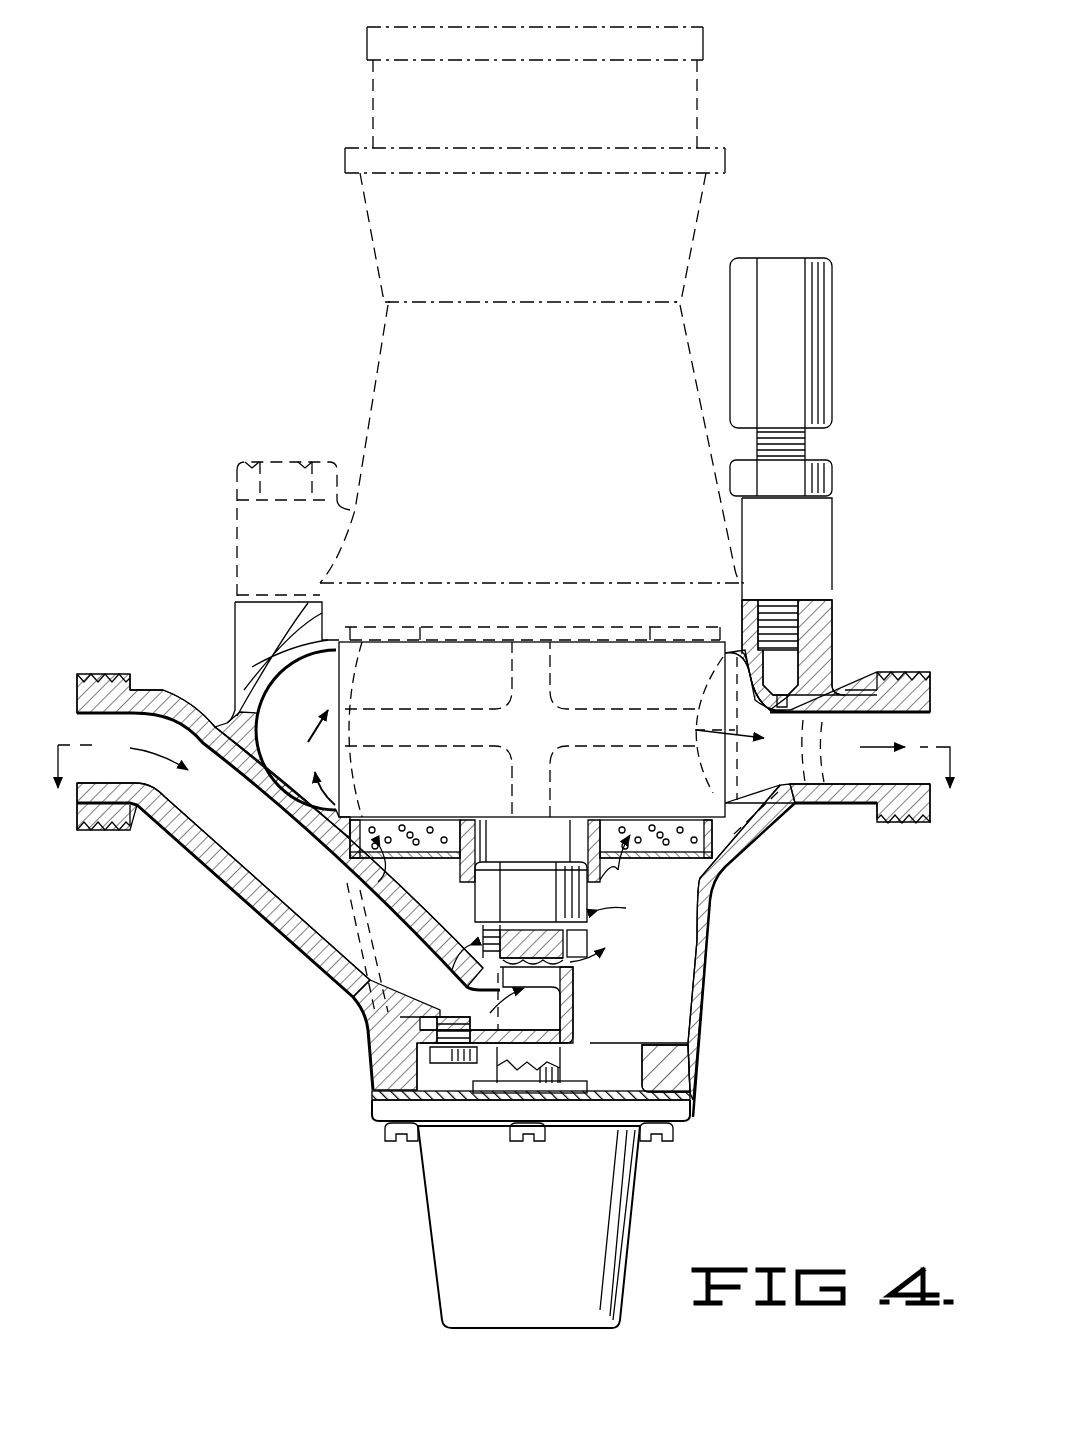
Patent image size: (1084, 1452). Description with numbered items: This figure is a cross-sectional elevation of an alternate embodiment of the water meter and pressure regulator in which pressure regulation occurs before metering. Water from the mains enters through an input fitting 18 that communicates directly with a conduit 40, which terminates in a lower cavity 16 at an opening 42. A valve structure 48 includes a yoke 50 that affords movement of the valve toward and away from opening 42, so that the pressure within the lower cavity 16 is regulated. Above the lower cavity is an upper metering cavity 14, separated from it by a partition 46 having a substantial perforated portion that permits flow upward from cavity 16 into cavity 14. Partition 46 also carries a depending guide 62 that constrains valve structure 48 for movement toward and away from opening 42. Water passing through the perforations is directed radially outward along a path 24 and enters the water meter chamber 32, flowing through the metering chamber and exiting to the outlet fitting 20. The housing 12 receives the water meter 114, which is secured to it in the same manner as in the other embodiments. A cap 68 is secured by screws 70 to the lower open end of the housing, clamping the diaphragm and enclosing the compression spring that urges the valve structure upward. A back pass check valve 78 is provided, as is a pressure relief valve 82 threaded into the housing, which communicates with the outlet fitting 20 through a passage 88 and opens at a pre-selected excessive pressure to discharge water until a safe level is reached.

The water meter 114 is at (378, 366).
The pressure relief valve 82 is at (834, 383).
The passage 88 is at (815, 650).
The outlet fitting 20 is at (858, 690).
The input fitting 18 is at (162, 696).
The housing 12 is at (290, 942).
The path 24 is at (300, 744).
The conduit 40 is at (257, 889).
The upper metering cavity 14 is at (648, 696).
The water meter chamber 32 is at (432, 710).
The depending guide 62 is at (466, 874).
The partition 46 is at (628, 822).
The valve structure 48 is at (556, 916).
The opening 42 is at (496, 1005).
The yoke 50 is at (558, 1066).
The back pass check valve 78 is at (450, 1015).
The lower cavity 16 is at (676, 970).
The screws 70 is at (388, 1142).
The cap 68 is at (430, 1245).